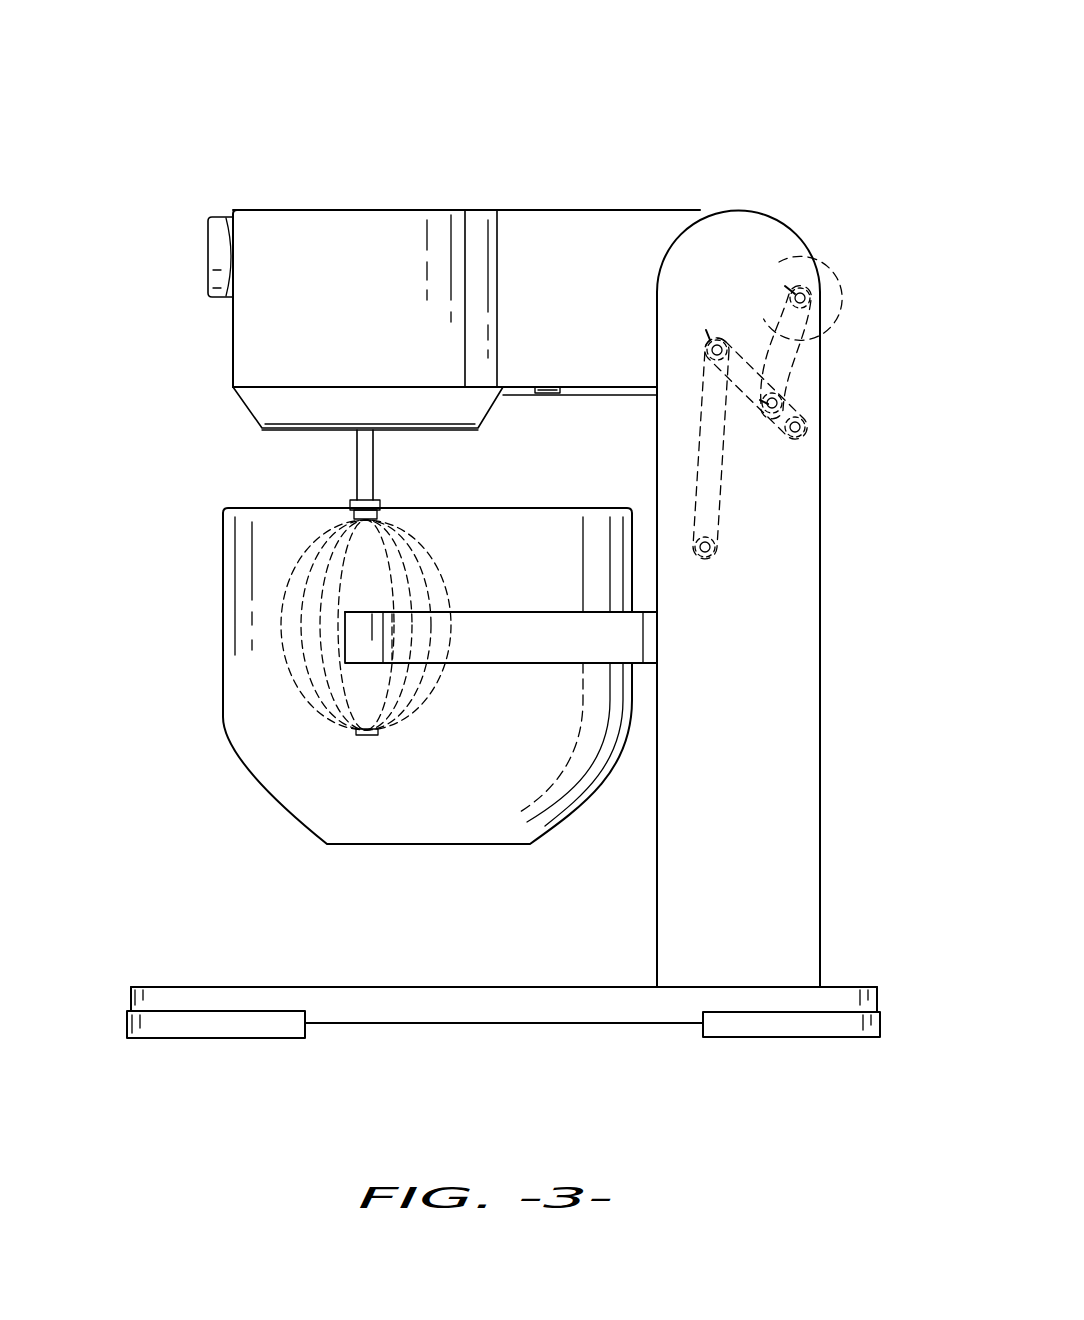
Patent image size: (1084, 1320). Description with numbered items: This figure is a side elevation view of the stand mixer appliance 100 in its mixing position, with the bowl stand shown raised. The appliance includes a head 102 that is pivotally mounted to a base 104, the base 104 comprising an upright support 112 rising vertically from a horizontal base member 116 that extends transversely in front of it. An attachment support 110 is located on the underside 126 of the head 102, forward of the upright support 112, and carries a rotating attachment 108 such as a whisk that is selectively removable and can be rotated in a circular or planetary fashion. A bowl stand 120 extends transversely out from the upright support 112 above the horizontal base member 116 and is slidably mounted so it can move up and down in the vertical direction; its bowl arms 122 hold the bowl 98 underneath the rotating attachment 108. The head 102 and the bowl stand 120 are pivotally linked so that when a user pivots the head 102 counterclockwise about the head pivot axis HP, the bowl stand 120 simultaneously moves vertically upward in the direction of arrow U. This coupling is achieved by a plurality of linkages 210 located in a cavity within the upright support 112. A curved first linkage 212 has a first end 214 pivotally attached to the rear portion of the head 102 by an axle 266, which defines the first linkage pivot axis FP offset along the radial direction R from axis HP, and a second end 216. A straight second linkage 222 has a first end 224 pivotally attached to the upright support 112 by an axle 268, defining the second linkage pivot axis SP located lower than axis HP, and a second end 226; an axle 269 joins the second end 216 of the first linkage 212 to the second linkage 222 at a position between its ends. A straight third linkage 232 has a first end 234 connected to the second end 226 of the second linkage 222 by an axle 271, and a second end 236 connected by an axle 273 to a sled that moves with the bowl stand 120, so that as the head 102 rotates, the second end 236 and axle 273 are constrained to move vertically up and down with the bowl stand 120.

The bowl 98 is at (247, 722).
The stand mixer appliance 100 is at (193, 140).
The head 102 is at (362, 235).
The base 104 is at (832, 975).
The rotating attachment 108 is at (315, 548).
The attachment support 110 is at (275, 400).
The upright support 112 is at (795, 800).
The horizontal base member 116 is at (382, 1000).
The bowl stand 120 is at (550, 648).
The bowl arms 122 is at (498, 650).
The underside 126 is at (565, 397).
The plurality of linkages 210 is at (680, 414).
The first linkage 212 is at (808, 300).
The first end of first linkage 214 is at (787, 284).
The second end of first linkage 216 is at (785, 382).
The second linkage 222 is at (774, 414).
The first end of second linkage 224 is at (797, 438).
The second end of second linkage 226 is at (716, 332).
The third linkage 232 is at (705, 456).
The first end of third linkage 234 is at (702, 351).
The second end of third linkage 236 is at (712, 556).
The axle 266 is at (796, 294).
The axle 268 is at (806, 427).
The axle 269 is at (778, 414).
The axle 271 is at (706, 338).
The axle 273 is at (708, 558).